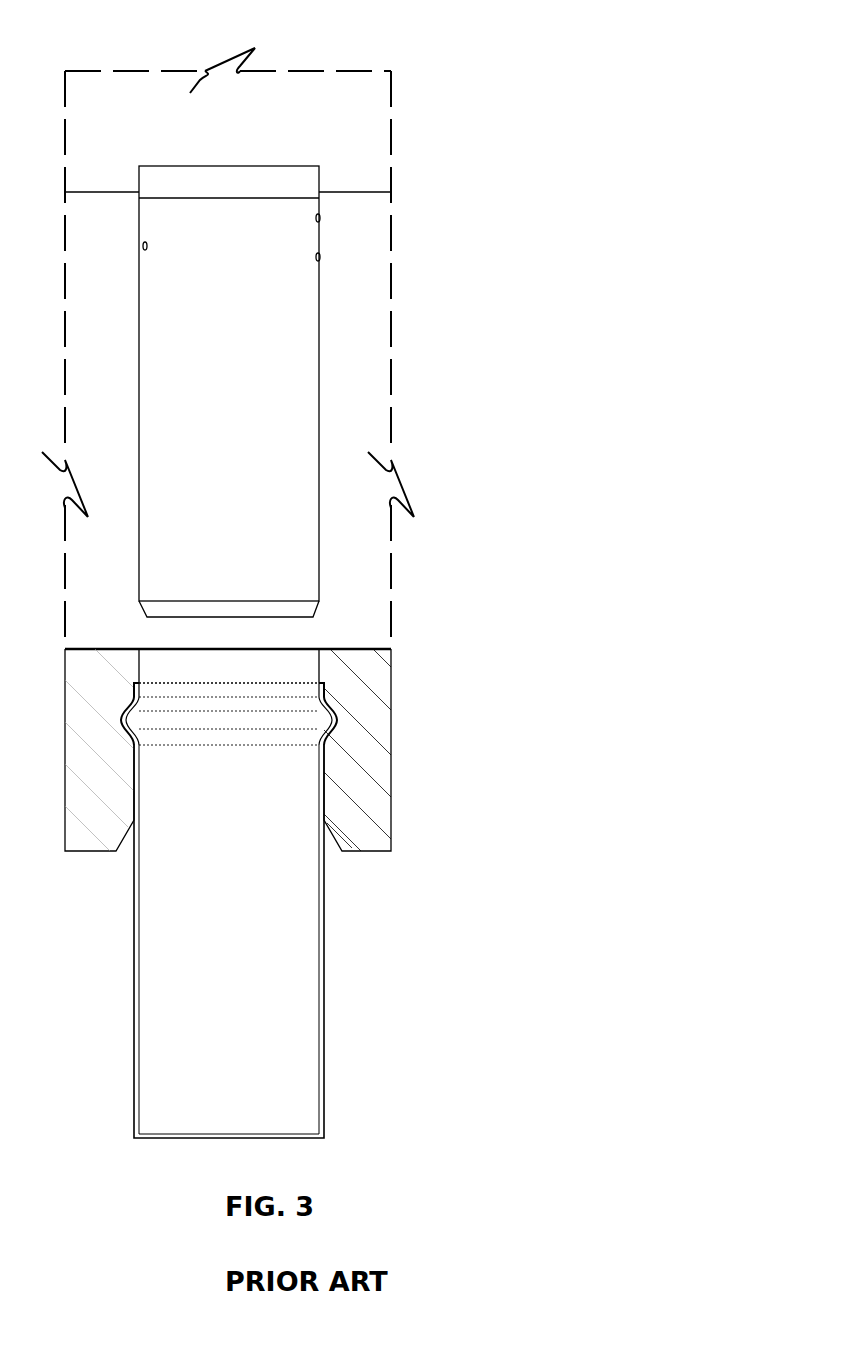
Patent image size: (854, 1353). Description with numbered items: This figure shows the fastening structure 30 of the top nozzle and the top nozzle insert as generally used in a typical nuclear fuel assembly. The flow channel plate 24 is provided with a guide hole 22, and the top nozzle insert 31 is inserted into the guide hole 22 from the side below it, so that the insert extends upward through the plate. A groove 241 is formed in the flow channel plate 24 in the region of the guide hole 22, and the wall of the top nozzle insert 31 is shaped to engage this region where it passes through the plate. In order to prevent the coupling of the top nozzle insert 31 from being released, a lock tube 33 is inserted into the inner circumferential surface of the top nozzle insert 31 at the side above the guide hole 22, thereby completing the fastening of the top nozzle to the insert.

The fastening structure 30 is at (417, 150).
The lock tube 33 is at (310, 335).
The guide hole 22 is at (243, 662).
The groove 241 is at (342, 720).
The flow channel plate 24 is at (378, 813).
The top nozzle insert 31 is at (324, 985).